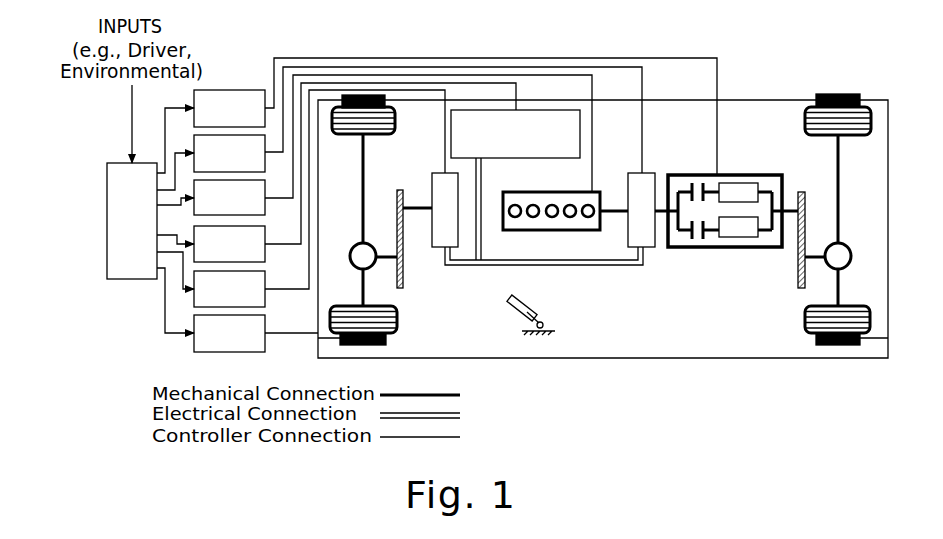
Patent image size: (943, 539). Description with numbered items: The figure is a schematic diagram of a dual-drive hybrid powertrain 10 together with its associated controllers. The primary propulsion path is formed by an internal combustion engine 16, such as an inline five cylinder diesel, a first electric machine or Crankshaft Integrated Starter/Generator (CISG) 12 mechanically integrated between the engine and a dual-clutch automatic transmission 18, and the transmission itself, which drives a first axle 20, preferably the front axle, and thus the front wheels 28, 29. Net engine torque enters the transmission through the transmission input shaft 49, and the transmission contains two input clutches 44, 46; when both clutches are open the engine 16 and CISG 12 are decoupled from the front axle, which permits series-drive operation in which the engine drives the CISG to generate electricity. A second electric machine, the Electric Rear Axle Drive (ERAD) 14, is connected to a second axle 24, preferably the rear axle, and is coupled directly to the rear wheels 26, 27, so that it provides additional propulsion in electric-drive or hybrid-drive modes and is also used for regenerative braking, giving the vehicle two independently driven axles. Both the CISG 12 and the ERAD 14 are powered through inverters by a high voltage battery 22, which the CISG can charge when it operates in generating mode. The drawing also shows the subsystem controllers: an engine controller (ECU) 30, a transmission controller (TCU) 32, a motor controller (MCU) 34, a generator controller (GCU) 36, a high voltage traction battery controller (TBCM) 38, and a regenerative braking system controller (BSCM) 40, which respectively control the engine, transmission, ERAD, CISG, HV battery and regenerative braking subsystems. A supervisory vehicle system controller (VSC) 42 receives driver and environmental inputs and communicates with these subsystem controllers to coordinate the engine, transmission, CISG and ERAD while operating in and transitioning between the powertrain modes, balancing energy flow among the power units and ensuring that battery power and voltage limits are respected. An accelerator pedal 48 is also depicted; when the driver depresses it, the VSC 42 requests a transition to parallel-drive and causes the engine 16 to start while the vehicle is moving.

The dual-drive hybrid powertrain 10 is at (820, 58).
The first electric machine (CISG) 12 is at (628, 190).
The second electric machine (ERAD) 14 is at (433, 247).
The internal combustion engine 16 is at (590, 230).
The transmission 18 is at (733, 175).
The first axle 20 is at (840, 196).
The high voltage battery 22 is at (527, 158).
The second axle 24 is at (363, 184).
The rear wheel 26 is at (397, 317).
The rear wheel 27 is at (437, 128).
The front wheel 28 is at (805, 316).
The front wheel 29 is at (816, 100).
The engine controller (ECU) 30 is at (265, 203).
The transmission controller (TCU) 32 is at (237, 64).
The motor controller (MCU) 34 is at (265, 283).
The generator controller (GCU) 36 is at (265, 163).
The high voltage traction battery controller (TBCM) 38 is at (194, 240).
The regenerative braking system (BSCM) 40 is at (265, 343).
The vehicle system controller (VSC) 42 is at (107, 208).
The input clutch 44 is at (692, 190).
The input clutch 46 is at (692, 233).
The accelerator pedal 48 is at (510, 310).
The transmission input shaft 49 is at (663, 214).